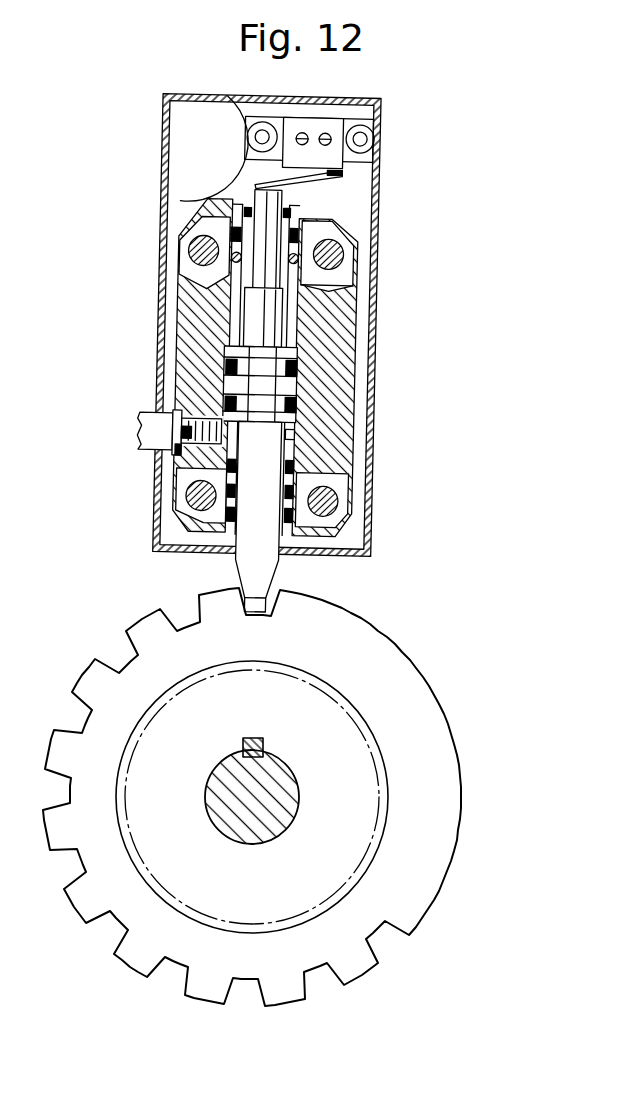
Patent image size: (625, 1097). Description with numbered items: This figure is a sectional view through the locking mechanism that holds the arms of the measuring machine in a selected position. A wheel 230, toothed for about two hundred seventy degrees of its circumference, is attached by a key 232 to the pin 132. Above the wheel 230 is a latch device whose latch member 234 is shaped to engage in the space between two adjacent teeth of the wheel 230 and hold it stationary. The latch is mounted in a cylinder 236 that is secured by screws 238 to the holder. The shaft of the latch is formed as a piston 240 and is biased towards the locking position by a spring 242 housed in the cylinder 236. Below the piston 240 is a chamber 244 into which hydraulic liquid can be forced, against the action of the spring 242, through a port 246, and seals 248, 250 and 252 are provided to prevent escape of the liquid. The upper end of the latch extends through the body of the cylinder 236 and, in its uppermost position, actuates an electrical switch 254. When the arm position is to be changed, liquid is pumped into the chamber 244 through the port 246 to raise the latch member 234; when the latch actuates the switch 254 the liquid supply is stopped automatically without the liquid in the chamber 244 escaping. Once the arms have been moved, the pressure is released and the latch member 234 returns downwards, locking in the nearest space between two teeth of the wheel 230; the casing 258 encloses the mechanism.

The pin 132 is at (273, 822).
The wheel 230 is at (405, 678).
The key 232 is at (256, 738).
The latch member 234 is at (252, 571).
The cylinder 236 is at (350, 347).
The screws 238 is at (195, 222).
The piston 240 is at (258, 350).
The spring 242 is at (332, 282).
The chamber 244 is at (293, 433).
The port 246 is at (140, 433).
The seal 248 is at (296, 470).
The seal 250 is at (250, 378).
The seal 252 is at (298, 233).
The electrical switch 254 is at (316, 182).
The casing 258 is at (380, 313).